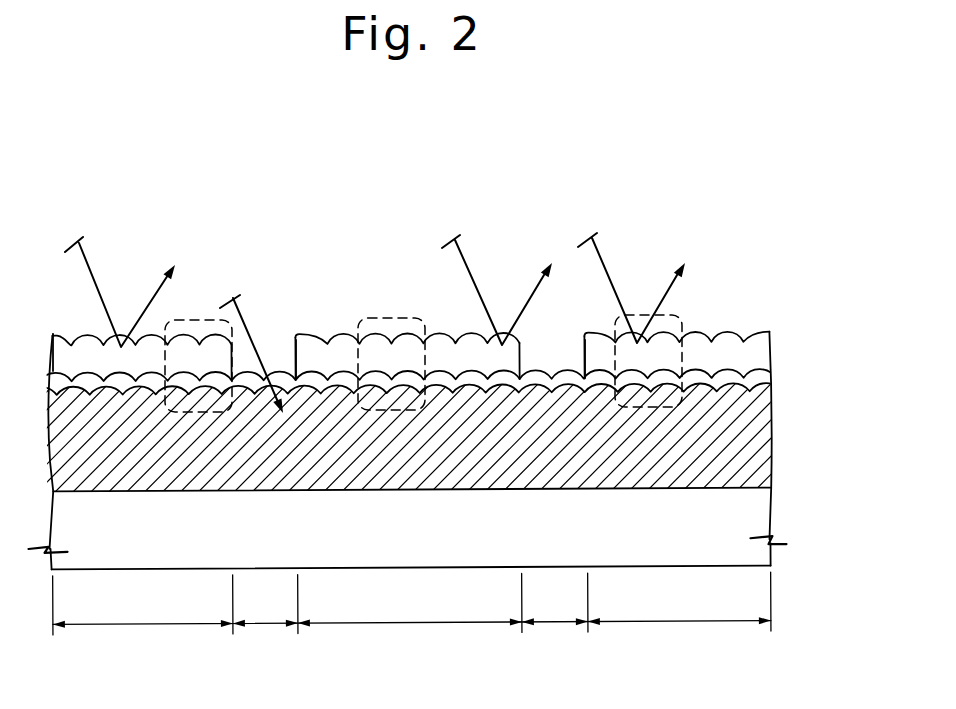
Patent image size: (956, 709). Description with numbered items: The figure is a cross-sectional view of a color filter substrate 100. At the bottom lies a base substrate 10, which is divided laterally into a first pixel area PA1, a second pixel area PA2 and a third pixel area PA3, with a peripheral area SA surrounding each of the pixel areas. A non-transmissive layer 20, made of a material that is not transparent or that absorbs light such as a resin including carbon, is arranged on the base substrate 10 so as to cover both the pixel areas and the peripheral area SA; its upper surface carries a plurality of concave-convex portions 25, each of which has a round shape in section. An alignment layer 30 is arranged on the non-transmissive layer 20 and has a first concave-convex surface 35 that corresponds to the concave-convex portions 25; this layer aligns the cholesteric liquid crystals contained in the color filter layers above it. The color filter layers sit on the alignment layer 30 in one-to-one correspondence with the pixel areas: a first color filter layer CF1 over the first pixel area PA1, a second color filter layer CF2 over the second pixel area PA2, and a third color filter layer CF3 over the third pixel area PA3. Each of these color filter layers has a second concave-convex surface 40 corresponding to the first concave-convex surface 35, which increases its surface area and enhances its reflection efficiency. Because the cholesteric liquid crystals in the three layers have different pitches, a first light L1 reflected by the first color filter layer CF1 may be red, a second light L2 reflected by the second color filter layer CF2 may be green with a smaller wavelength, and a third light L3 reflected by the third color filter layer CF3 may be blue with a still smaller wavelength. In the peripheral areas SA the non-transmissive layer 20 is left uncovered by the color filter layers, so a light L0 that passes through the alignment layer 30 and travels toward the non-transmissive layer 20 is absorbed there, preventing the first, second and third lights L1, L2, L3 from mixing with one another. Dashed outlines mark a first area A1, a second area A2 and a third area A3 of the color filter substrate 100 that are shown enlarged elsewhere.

The color filter substrate 100 is at (634, 205).
The base substrate 10 is at (750, 517).
The non-transmissive layer 20 is at (757, 430).
The concave-convex portions 25 is at (740, 378).
The alignment layer 30 is at (702, 371).
The first concave-convex surface 35 is at (698, 340).
The second concave-convex surface 40 is at (737, 324).
The first color filter layer CF1 is at (73, 335).
The second color filter layer CF2 is at (318, 337).
The third color filter layer CF3 is at (697, 330).
The first area A1 is at (200, 320).
The second area A2 is at (392, 318).
The third area A3 is at (648, 318).
The light L0 is at (257, 353).
The first light L1 is at (100, 295).
The second light L2 is at (478, 292).
The third light L3 is at (619, 303).
The first pixel area PA1 is at (140, 647).
The second pixel area PA2 is at (409, 646).
The third pixel area PA3 is at (678, 644).
The peripheral area SA is at (410, 646).